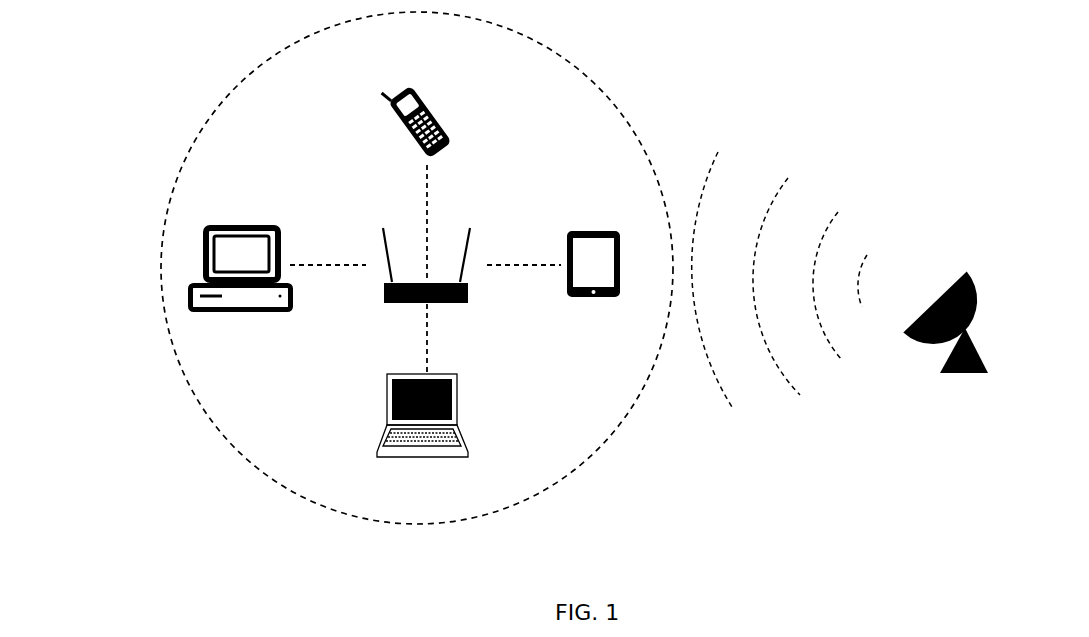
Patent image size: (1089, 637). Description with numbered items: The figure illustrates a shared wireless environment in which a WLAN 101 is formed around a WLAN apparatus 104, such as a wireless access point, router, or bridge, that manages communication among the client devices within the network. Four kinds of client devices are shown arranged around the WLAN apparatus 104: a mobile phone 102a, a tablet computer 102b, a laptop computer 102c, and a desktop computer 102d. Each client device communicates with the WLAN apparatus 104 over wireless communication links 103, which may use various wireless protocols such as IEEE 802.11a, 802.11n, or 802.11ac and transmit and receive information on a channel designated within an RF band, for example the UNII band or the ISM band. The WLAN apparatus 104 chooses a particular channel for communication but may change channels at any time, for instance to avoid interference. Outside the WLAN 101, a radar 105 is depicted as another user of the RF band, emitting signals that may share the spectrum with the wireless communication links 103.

The WLAN 101 is at (259, 49).
The mobile phone 102a is at (383, 108).
The tablet computer 102b is at (591, 212).
The laptop computer 102c is at (362, 388).
The desktop computer 102d is at (235, 204).
The wireless communication links 103 is at (438, 186).
The WLAN apparatus 104 is at (479, 304).
The radar 105 is at (994, 291).